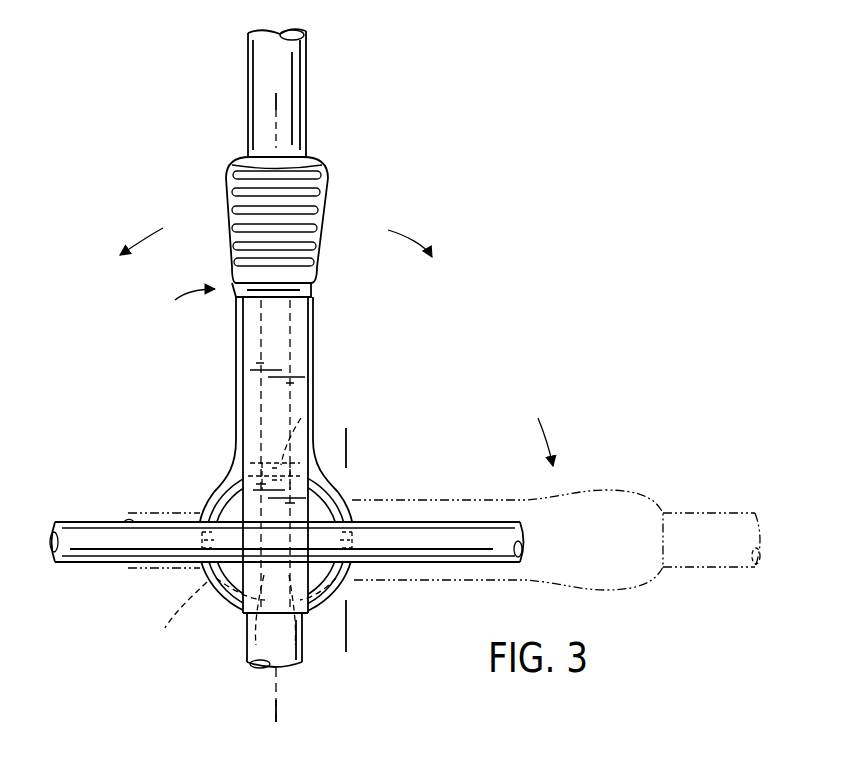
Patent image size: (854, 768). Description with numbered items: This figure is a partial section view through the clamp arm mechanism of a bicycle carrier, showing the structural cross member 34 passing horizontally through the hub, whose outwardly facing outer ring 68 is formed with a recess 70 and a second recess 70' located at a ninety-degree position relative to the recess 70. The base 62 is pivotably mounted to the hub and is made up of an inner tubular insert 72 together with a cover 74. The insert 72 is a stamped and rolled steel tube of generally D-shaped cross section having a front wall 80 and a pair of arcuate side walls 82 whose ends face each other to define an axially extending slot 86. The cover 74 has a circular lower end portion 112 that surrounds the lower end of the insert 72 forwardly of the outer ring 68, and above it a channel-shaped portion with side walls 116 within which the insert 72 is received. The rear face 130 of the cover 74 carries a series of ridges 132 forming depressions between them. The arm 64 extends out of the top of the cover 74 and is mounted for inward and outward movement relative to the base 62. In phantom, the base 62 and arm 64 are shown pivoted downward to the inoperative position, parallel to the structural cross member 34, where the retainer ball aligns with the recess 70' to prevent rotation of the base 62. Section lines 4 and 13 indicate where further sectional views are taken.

The section line 4- 4 is at (283, 100).
The section line 13- 13 is at (352, 435).
The structural cross member 34 is at (97, 522).
The base 62 is at (367, 267).
The arm 64 is at (320, 62).
The outer ring 68 is at (218, 496).
The recess 70 is at (309, 442).
The recess 70' is at (276, 597).
The insert 72 is at (238, 410).
The cover 74 is at (167, 279).
The front wall 80 is at (301, 398).
The side walls 82 is at (322, 678).
The slot 86 is at (249, 648).
The circular lower end portion 112 is at (349, 483).
The side walls 116 is at (316, 321).
The rear face 130 is at (334, 221).
The ridges 132 is at (334, 193).